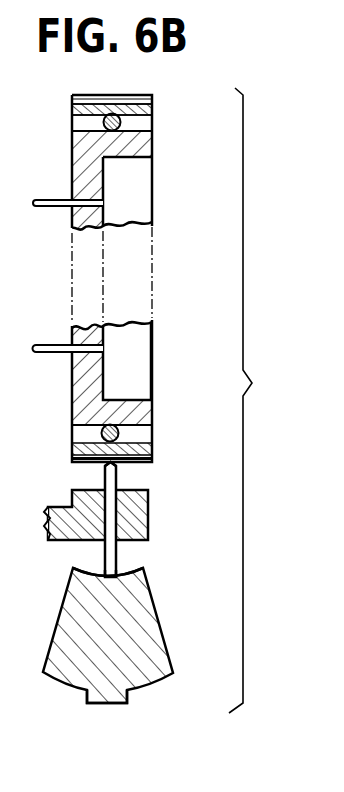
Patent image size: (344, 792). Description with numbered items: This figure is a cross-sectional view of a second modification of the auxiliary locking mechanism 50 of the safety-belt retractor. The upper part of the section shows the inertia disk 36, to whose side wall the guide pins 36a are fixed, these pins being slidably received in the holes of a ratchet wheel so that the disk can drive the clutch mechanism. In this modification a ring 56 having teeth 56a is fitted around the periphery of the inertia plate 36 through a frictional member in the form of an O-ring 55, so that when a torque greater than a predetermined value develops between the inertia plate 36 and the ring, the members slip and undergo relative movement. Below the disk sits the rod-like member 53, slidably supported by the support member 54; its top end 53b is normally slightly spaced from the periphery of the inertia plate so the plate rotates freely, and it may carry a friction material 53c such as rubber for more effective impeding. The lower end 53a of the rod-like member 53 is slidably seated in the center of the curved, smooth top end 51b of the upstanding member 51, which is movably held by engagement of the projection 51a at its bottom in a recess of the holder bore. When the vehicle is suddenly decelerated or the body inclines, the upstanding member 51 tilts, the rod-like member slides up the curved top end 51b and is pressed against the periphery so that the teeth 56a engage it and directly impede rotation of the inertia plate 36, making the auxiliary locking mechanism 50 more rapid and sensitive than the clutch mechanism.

The inertia disk 36 is at (137, 345).
The guide pins 36a is at (133, 413).
The auxiliary locking mechanism 50 is at (290, 401).
The upstanding member 51 is at (135, 608).
The projection 51a is at (116, 697).
The top end 51b is at (148, 571).
The rod-like member 53 is at (110, 509).
The lower end 53a is at (117, 572).
The top end 53b is at (120, 469).
The friction material 53c is at (104, 467).
The support member 54 is at (49, 525).
The O-ring 55 is at (122, 123).
The ring 56 is at (146, 109).
The teeth 56a is at (143, 100).